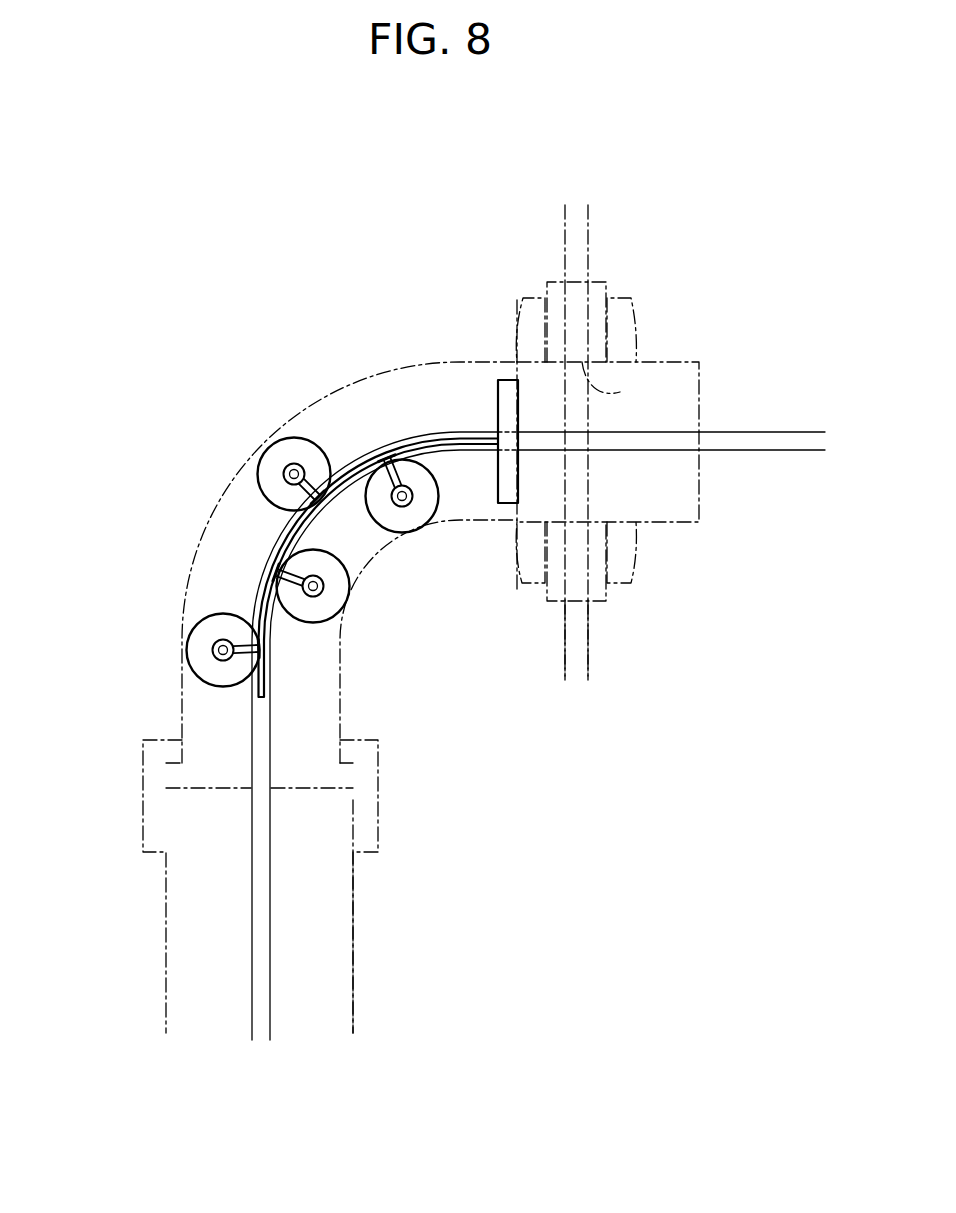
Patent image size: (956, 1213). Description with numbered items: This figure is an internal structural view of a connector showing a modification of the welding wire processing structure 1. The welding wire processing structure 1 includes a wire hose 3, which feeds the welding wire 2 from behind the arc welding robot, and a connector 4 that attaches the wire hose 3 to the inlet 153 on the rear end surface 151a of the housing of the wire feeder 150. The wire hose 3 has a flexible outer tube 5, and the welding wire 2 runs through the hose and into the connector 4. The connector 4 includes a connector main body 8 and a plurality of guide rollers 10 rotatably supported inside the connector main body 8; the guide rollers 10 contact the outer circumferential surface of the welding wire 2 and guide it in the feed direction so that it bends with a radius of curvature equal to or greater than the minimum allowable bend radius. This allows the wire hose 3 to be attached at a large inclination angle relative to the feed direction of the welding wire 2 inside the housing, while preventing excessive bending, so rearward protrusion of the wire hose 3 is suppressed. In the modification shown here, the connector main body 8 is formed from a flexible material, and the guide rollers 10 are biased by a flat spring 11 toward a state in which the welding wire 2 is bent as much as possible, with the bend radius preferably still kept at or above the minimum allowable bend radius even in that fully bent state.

The welding wire processing structure 1 is at (260, 347).
The welding wire 2 is at (745, 452).
The wire hose 3 is at (166, 893).
The connector 4 is at (363, 368).
The outer tube 5 is at (354, 935).
The connector main body 8 is at (236, 486).
The guide rollers 10 is at (212, 617).
The flat spring 11 is at (362, 462).
The wire feeder 150 is at (565, 236).
The rear end surface 151a is at (563, 643).
The inlet 153 is at (620, 392).